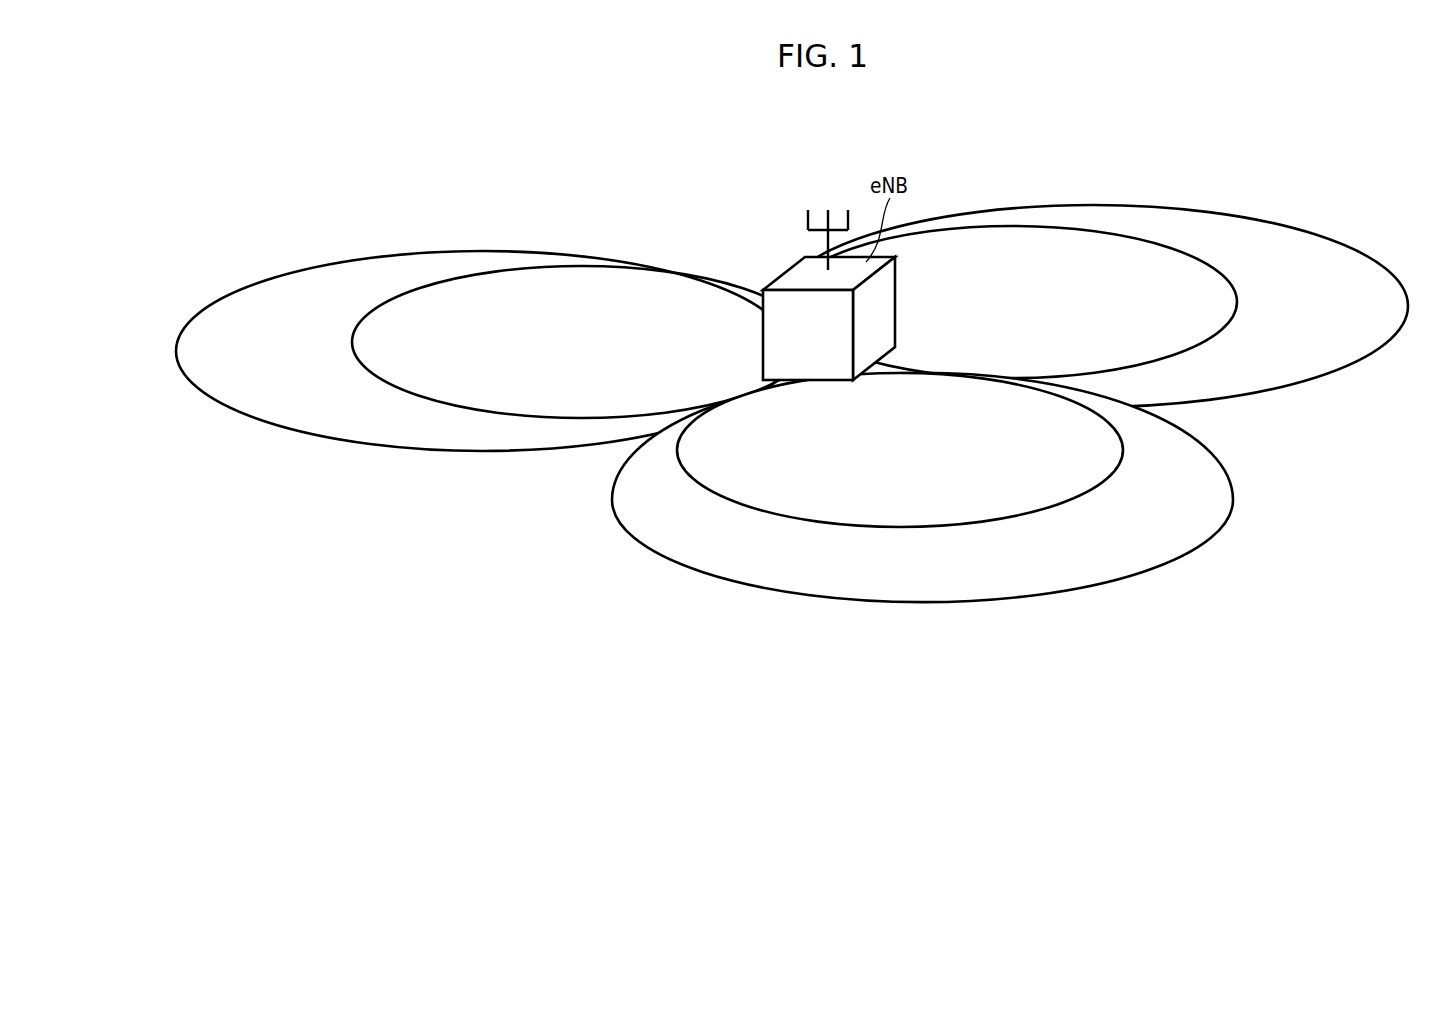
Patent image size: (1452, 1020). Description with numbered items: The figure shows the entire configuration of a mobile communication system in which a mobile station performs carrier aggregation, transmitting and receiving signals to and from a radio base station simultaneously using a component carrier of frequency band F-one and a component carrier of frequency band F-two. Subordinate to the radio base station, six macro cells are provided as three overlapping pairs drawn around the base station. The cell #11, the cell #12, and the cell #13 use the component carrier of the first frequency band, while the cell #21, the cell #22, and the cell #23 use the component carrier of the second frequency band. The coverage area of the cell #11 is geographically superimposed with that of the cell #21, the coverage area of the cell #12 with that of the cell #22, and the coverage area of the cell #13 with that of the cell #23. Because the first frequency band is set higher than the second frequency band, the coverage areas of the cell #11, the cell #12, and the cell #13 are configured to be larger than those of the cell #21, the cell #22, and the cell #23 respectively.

The cell 11 is at (385, 450).
The cell 21 is at (472, 272).
The cell 12 is at (1190, 206).
The cell 22 is at (1050, 228).
The cell 13 is at (860, 603).
The cell 23 is at (787, 518).